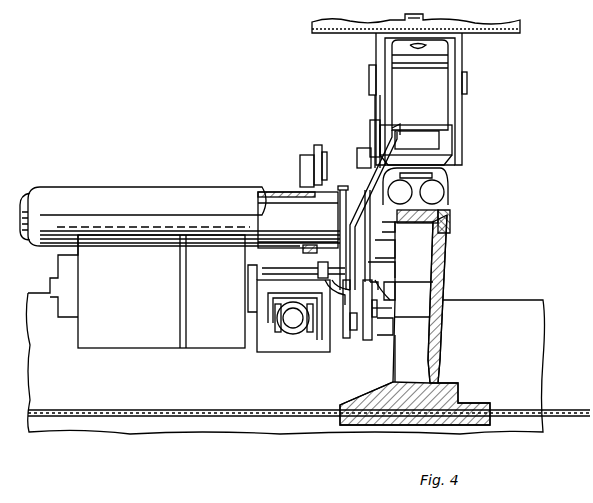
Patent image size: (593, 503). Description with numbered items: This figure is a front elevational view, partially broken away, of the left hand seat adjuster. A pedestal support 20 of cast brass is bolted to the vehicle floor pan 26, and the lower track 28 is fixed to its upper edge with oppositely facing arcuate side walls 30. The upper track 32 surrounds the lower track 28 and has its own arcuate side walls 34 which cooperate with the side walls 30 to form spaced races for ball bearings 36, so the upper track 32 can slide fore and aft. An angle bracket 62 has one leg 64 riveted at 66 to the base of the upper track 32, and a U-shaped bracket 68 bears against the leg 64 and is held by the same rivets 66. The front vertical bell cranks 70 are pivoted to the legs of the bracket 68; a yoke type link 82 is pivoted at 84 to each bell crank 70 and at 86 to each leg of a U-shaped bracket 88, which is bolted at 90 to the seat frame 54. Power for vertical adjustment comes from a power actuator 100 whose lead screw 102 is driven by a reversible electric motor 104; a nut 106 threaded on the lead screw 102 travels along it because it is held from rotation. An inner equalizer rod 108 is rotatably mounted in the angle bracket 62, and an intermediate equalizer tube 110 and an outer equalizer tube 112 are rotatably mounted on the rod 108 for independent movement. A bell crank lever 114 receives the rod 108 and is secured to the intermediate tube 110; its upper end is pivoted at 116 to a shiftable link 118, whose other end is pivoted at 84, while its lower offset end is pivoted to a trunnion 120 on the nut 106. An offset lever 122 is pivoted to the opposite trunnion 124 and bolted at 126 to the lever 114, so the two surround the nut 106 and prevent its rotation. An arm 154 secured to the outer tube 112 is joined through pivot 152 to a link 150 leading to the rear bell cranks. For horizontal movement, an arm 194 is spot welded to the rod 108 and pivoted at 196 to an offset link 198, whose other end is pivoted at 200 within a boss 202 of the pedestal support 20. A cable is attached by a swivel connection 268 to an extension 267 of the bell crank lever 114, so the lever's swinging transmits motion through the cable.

The pedestal support 20 is at (445, 270).
The vehicle floor pan 26 is at (130, 410).
The lower track 28 is at (450, 218).
The arcuate side walls 30 is at (413, 188).
The upper track 32 is at (428, 132).
The arcuate side walls 34 is at (445, 205).
The ball bearings 36 is at (444, 193).
The seat frame 54 is at (520, 22).
The angle bracket 62 is at (382, 228).
The leg 64 is at (366, 160).
The rivets 66 is at (445, 175).
The U-shaped bracket 68 is at (410, 135).
The front vertical bell cranks 70 is at (375, 106).
The yoke type link 82 is at (440, 78).
The pivot 84 is at (370, 132).
The pivot 86 is at (369, 78).
The U-shaped bracket 88 is at (462, 52).
The bolt 90 is at (423, 17).
The power actuator 100 is at (265, 345).
The lead screw 102 is at (300, 335).
The reversible electric motor 104 is at (118, 335).
The nut 106 is at (290, 335).
The inner equalizer rod 108 is at (365, 210).
The intermediate equalizer tube 110 is at (262, 200).
The outer equalizer tube 112 is at (168, 187).
The bell crank lever 114 is at (340, 212).
The pivot 116 is at (380, 250).
The shiftable link 118 is at (375, 182).
The trunnion 120 is at (312, 335).
The offset lever 122 is at (250, 280).
The trunnion 124 is at (275, 316).
The bolt 126 is at (318, 266).
The link 150 is at (318, 145).
The pivot 152 is at (300, 170).
The arm 154 is at (322, 160).
The arm 194 is at (370, 270).
The pivot 196 is at (388, 340).
The offset link 198 is at (380, 325).
The pivot 200 is at (383, 302).
The boss 202 is at (433, 300).
The extension 267 is at (348, 338).
The swivel connection 268 is at (368, 340).